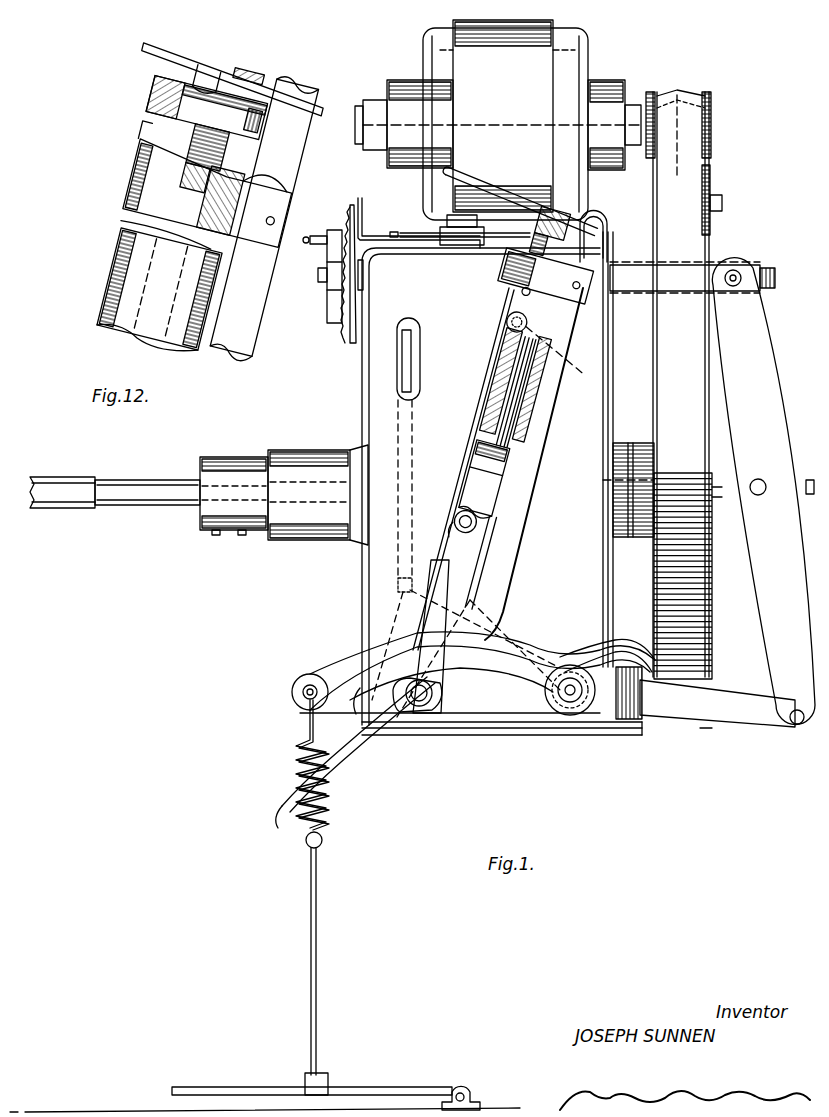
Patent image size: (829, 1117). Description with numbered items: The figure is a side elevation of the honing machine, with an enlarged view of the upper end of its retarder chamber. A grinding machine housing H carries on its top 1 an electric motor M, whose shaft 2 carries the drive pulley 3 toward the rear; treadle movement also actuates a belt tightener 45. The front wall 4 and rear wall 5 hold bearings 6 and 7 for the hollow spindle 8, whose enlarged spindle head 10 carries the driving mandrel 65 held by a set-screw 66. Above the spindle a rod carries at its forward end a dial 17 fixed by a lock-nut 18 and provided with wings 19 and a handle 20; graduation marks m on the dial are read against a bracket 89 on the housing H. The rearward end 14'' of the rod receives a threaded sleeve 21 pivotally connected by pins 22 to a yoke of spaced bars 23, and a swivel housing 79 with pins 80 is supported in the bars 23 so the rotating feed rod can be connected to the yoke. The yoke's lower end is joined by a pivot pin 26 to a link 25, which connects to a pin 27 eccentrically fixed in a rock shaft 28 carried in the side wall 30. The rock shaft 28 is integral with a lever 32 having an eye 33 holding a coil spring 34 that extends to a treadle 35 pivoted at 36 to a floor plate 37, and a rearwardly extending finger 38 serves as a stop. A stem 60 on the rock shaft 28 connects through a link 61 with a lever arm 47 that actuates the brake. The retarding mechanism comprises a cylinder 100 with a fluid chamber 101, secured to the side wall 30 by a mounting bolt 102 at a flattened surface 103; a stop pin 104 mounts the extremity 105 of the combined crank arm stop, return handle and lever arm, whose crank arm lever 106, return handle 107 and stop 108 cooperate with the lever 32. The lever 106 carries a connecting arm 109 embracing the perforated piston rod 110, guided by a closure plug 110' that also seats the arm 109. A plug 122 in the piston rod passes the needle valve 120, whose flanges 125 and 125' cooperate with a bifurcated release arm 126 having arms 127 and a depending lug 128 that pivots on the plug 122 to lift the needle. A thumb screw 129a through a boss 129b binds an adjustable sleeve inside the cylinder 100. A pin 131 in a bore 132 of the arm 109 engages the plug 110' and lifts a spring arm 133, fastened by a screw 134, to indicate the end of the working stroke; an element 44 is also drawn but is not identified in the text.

In FIG. 1, the electric motor M is at (498, 132).
In FIG. 1, the motor shaft 2 is at (644, 118).
In FIG. 1, the drive pulley 3 is at (710, 112).
In FIG. 1, the belt tightener 45 is at (710, 180).
In FIG. 1, the housing 79 is at (735, 520).
In FIG. 1, the rear wall 5 is at (609, 412).
In FIG. 1, the grinding machine housing H is at (609, 346).
In FIG. 1, the rearward end of rod 14'' is at (708, 283).
In FIG. 1, the threaded sleeve 21 is at (733, 270).
In FIG. 1, the pins 22 is at (745, 270).
In FIG. 1, the spaced bars of yoke 23 is at (755, 385).
In FIG. 1, the pins of housing 80 is at (760, 473).
In FIG. 1, the pivot pin 26 is at (797, 726).
In FIG. 1, the link 25 is at (740, 712).
In FIG. 1, the finger 38 is at (626, 642).
In FIG. 1, the front wall 4 is at (362, 392).
In FIG. 1, the side wall 30 is at (557, 582).
In FIG. 1, the lever arm 47 is at (412, 348).
In FIG. 1, the link 61 is at (412, 510).
In FIG. 1, the dial 17 is at (348, 215).
In FIG. 1, the graduation marks m is at (348, 332).
In FIG. 1, the bracket 89 is at (364, 212).
In FIG. 1, the wings 19 is at (333, 308).
In FIG. 1, the handle 20 is at (306, 244).
In FIG. 1, the lock-nut 18 is at (318, 276).
In FIG. 1, the top of housing 1 is at (492, 250).
In FIG. 1, the spindle head 10 is at (300, 452).
In FIG. 1, the set-screw 66 is at (242, 535).
In FIG. 1, the driving mandrel 65 is at (73, 508).
In FIG. 1, the crank arm lever 106 is at (536, 462).
In FIG. 12, the crank arm lever 106 is at (250, 312).
In FIG. 1, the connecting arm 109 is at (546, 276).
In FIG. 12, the connecting arm 109 is at (120, 188).
In FIG. 1, the release arm 126 is at (478, 180).
In FIG. 12, the release arm 126 is at (209, 33).
In FIG. 1, the cylinder 44 is at (612, 218).
In FIG. 1, the cylinder 100 is at (476, 345).
In FIG. 12, the cylinder 100 is at (123, 320).
In FIG. 1, the thumb screw 129a is at (474, 323).
In FIG. 1, the boss 129b is at (573, 366).
In FIG. 1, the needle valve 120 is at (494, 396).
In FIG. 1, the piston rod 110 is at (561, 404).
In FIG. 1, the fluid chamber 101 is at (476, 468).
In FIG. 1, the mounting bolt 102 is at (498, 528).
In FIG. 1, the flattened cylinder wall 103 is at (433, 536).
In FIG. 1, the stem 60 is at (508, 645).
In FIG. 1, the lever 32 is at (518, 676).
In FIG. 1, the eye 33 is at (302, 693).
In FIG. 1, the pin 27 is at (568, 664).
In FIG. 1, the rock shaft 28 is at (570, 700).
In FIG. 1, the extremity 105 is at (433, 693).
In FIG. 1, the stop pin 104 is at (419, 702).
In FIG. 1, the stop 108 is at (360, 690).
In FIG. 1, the return handle 107 is at (338, 740).
In FIG. 1, the coil spring 34 is at (328, 810).
In FIG. 1, the treadle 35 is at (238, 1086).
In FIG. 1, the treadle pivot 36 is at (464, 1088).
In FIG. 1, the floor plate 37 is at (455, 1095).
In FIG. 12, the closure plug 110' is at (132, 234).
In FIG. 12, the pin 131 is at (173, 169).
In FIG. 12, the bore 132 is at (180, 204).
In FIG. 12, the screw 134 is at (282, 170).
In FIG. 12, the spring arm 133 is at (116, 140).
In FIG. 12, the plug 122 is at (206, 146).
In FIG. 12, the bearing 6 is at (207, 108).
In FIG. 12, the bearing 7 is at (165, 97).
In FIG. 12, the hollow spindle 8 is at (260, 124).
In FIG. 12, the annular flange 125' is at (235, 67).
In FIG. 12, the spaced arms 127 is at (354, 114).
In FIG. 12, the annular flange 125 is at (265, 59).
In FIG. 12, the depending lug 128 is at (158, 82).